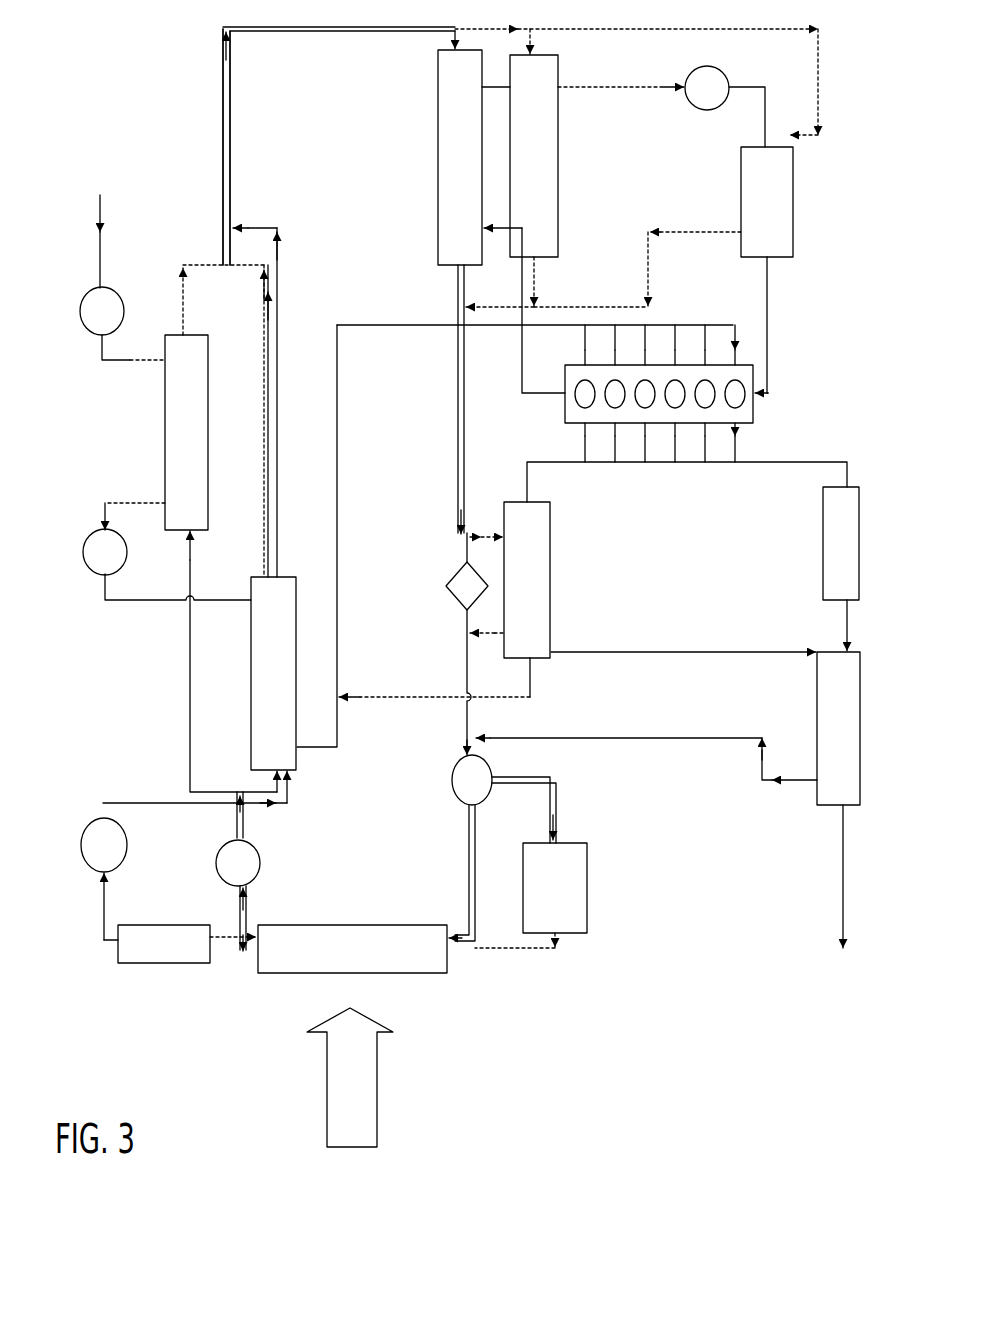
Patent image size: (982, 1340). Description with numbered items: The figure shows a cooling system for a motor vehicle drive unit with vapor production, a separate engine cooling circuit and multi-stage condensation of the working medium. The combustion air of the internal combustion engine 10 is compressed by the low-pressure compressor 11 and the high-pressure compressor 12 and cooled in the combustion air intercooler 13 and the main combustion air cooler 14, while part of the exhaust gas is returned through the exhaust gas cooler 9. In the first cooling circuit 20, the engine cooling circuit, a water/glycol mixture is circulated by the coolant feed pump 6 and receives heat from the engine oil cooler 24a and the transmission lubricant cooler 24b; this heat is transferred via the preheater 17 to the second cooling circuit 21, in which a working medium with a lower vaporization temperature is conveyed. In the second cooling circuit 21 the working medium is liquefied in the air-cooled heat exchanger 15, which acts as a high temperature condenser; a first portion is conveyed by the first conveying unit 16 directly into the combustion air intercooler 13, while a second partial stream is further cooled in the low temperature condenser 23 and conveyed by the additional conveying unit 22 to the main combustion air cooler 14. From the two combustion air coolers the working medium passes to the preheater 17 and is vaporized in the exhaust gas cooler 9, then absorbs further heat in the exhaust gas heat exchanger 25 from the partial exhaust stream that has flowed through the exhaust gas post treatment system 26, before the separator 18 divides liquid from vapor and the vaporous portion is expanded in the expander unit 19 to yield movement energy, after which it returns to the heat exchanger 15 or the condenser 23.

The coolant feed pump 6 is at (708, 90).
The exhaust gas cooler 9 is at (530, 553).
The internal combustion engine 10 is at (657, 415).
The low-pressure compressor 11 is at (95, 303).
The high-pressure compressor 12 is at (102, 545).
The combustion air intercooler 13 is at (198, 378).
The main combustion air cooler 14 is at (272, 693).
The air-cooled heat exchanger 15 is at (405, 955).
The first conveying unit 16 is at (235, 858).
The preheater 17 is at (450, 177).
The separator 18 is at (462, 785).
The expander unit 19 is at (558, 880).
The first cooling circuit 20 is at (772, 340).
The second cooling circuit 21 is at (230, 128).
The additional conveying unit 22 is at (104, 840).
The low temperature condenser 23 is at (158, 950).
The engine oil cooler 24a is at (767, 215).
The transmission lubricant cooler 24b is at (532, 125).
The exhaust gas heat exchanger 25 is at (830, 702).
The exhaust gas post treatment system 26 is at (832, 537).